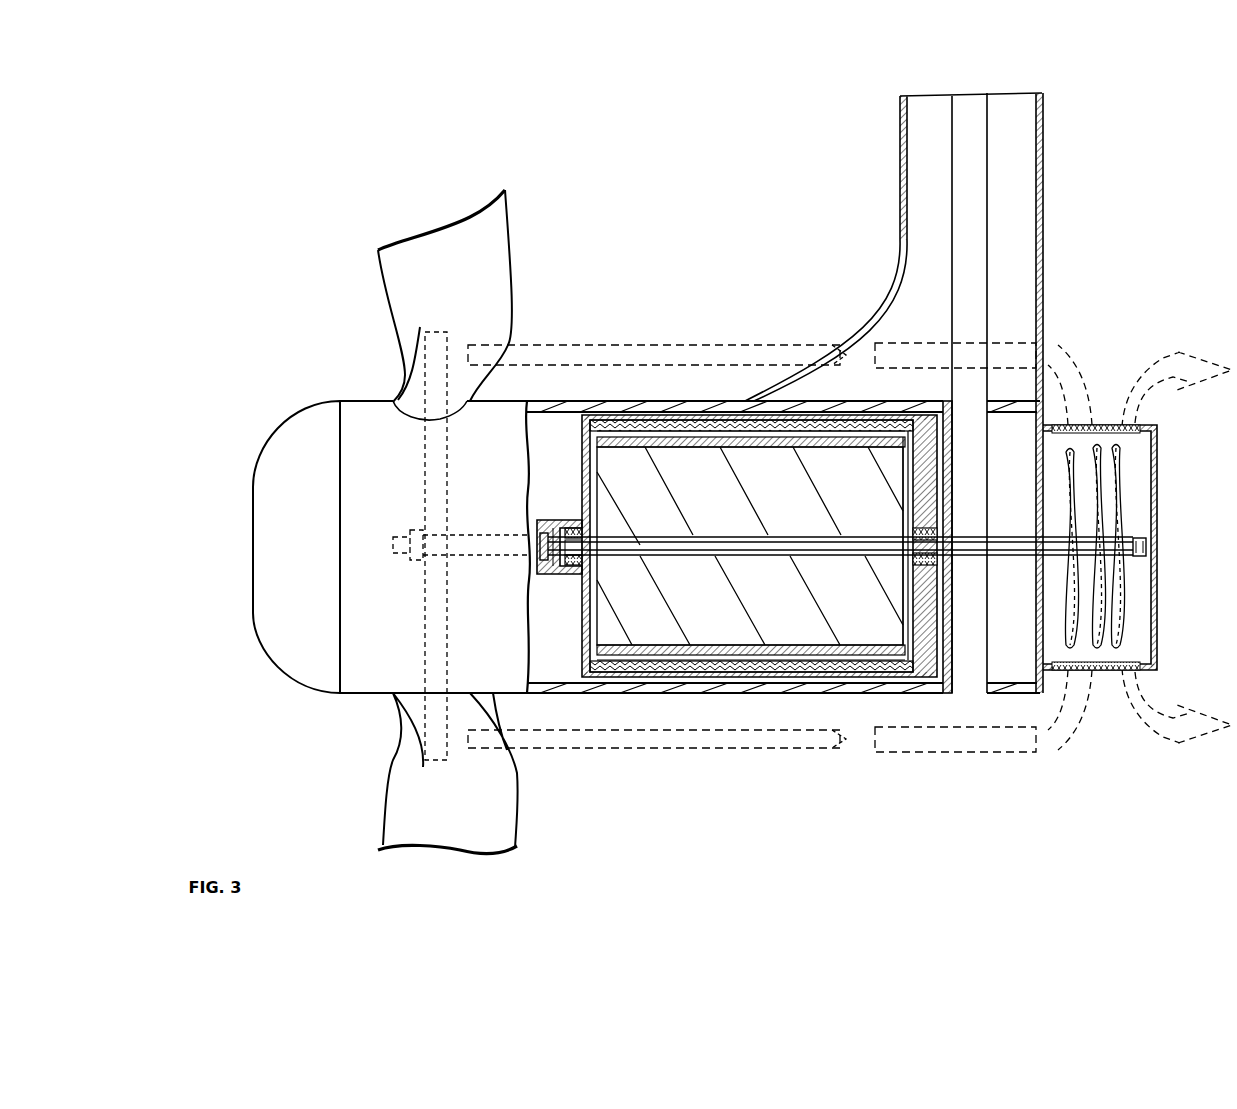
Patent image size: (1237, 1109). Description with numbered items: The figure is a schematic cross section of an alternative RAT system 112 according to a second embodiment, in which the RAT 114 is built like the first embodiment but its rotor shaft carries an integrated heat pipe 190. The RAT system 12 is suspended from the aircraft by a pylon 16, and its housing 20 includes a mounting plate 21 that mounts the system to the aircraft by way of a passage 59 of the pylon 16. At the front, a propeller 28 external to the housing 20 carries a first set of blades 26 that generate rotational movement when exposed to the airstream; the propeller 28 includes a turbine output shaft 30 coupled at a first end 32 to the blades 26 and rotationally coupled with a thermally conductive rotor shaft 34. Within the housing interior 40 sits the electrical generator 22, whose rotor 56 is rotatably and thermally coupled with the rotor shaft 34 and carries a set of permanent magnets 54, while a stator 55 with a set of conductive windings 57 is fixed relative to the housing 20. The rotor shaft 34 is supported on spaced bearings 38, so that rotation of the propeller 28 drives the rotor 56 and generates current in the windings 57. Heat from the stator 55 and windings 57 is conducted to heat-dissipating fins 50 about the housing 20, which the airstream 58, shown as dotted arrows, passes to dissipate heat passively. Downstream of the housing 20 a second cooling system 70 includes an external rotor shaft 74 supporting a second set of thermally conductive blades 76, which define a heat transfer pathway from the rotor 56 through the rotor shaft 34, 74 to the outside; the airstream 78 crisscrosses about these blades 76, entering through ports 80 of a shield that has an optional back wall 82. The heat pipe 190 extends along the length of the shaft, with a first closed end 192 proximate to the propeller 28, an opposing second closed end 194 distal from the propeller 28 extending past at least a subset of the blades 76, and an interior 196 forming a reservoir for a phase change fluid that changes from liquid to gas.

The RAT system 12 is at (972, 684).
The pylon 16 is at (1044, 247).
The housing 20 is at (488, 393).
The mounting plate 21 is at (970, 148).
The electrical generator 22 is at (573, 657).
The blades 26 is at (395, 797).
The propeller 28 is at (285, 470).
The turbine output shaft 30 is at (476, 540).
The first end 32 is at (400, 540).
The rotor shaft 34 is at (770, 553).
The bearings 38 is at (602, 562).
The housing interior 40 is at (566, 626).
The heat-dissipating fins 50 is at (718, 340).
The permanent magnets 54 is at (805, 433).
The stator 55 is at (634, 410).
The rotor 56 is at (717, 627).
The conductive windings 57 is at (681, 425).
The airstream 58 is at (580, 345).
The passage 59 is at (1020, 278).
The second cooling system 70 is at (1170, 631).
The external rotor shaft 74 is at (1128, 532).
The second set of thermally conductive blades 76 is at (1120, 462).
The airstream 78 is at (1057, 348).
The ports 80 is at (1128, 675).
The back wall 82 is at (1155, 514).
The RAT system 112 is at (618, 160).
The RAT 114 is at (335, 706).
The heat pipe 190 is at (857, 557).
The first closed end 192 is at (630, 560).
The second closed end 194 is at (1128, 560).
The interior 196 is at (828, 543).